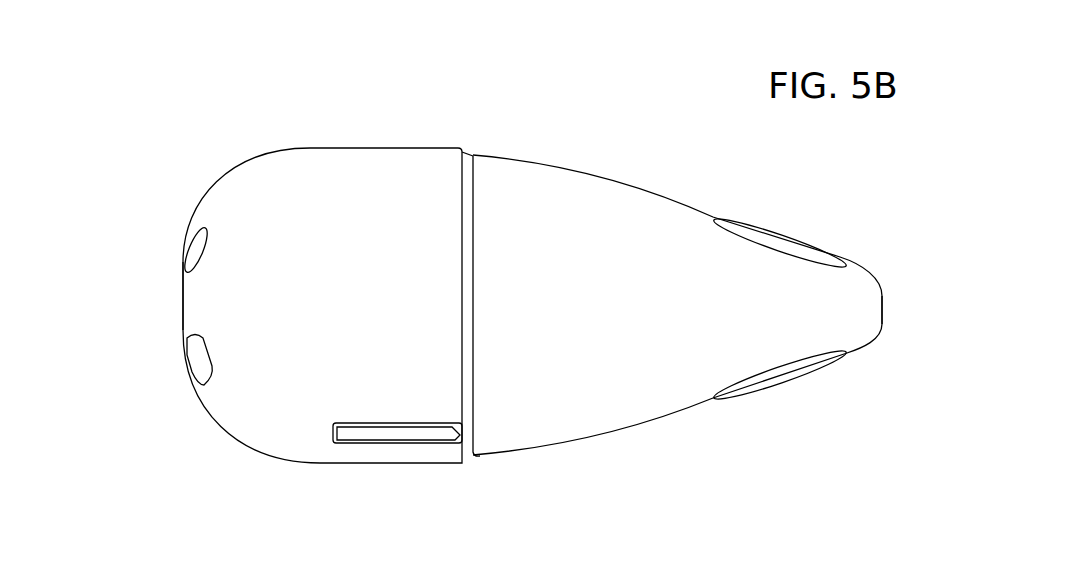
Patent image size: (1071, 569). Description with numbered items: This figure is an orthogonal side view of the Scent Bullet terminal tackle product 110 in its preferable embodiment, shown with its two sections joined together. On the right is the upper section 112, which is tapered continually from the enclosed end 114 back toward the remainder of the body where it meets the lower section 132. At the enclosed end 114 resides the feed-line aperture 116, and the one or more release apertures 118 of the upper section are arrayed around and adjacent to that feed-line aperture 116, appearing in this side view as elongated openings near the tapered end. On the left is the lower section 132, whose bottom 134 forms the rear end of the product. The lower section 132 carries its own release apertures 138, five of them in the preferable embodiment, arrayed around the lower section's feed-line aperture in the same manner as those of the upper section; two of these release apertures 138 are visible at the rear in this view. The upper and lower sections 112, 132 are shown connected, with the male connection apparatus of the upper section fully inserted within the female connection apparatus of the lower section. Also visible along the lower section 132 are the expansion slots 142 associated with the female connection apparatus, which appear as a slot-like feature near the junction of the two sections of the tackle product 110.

The Scent Bullet terminal tackle product 110 is at (476, 91).
The upper section 112 is at (612, 188).
The enclosed end 114 is at (896, 233).
The feed-line aperture 116 is at (895, 305).
The release apertures 118 is at (790, 378).
The lower section 132 is at (362, 160).
The bottom 134 is at (168, 304).
The release apertures 138 is at (192, 361).
The expansion slots 142 is at (392, 440).